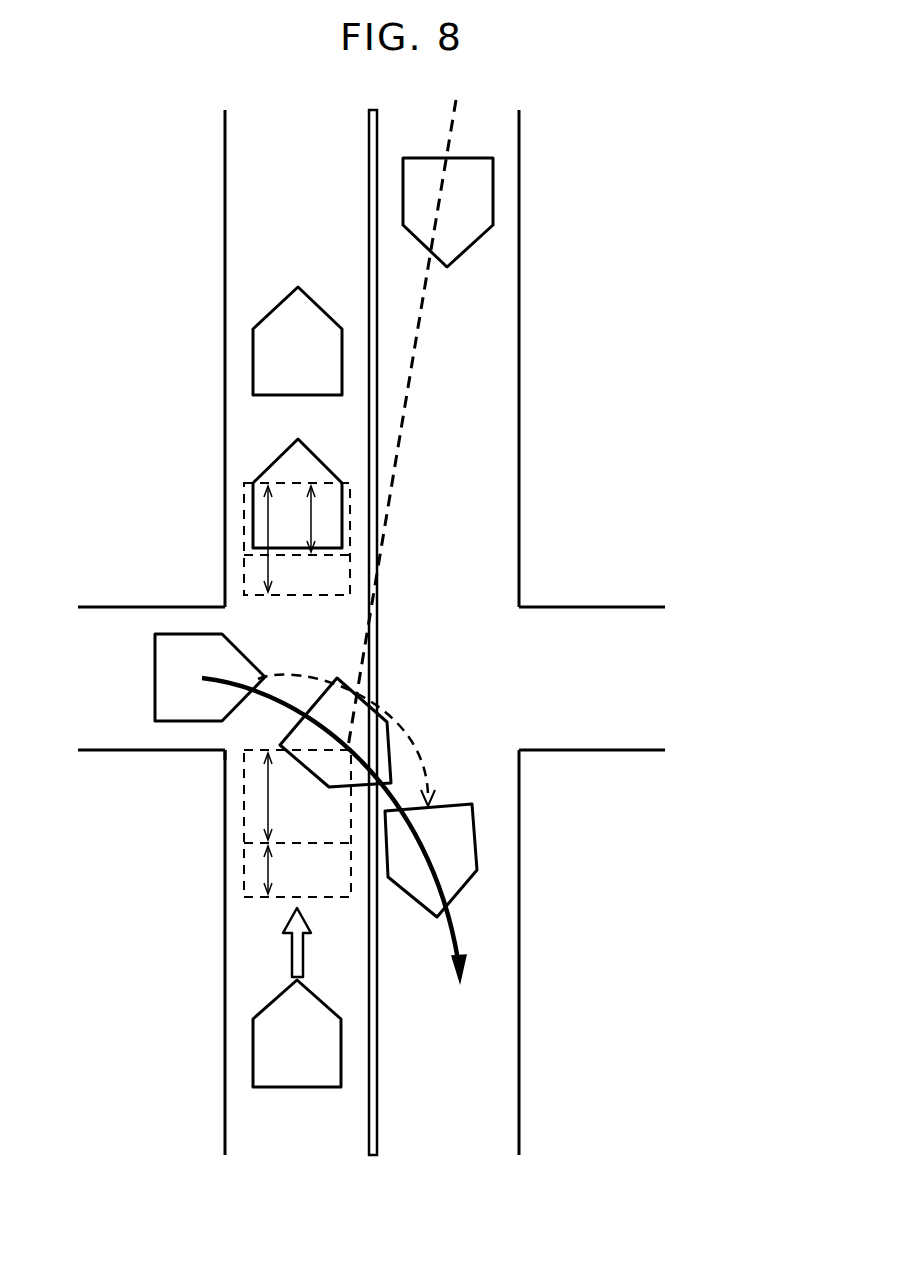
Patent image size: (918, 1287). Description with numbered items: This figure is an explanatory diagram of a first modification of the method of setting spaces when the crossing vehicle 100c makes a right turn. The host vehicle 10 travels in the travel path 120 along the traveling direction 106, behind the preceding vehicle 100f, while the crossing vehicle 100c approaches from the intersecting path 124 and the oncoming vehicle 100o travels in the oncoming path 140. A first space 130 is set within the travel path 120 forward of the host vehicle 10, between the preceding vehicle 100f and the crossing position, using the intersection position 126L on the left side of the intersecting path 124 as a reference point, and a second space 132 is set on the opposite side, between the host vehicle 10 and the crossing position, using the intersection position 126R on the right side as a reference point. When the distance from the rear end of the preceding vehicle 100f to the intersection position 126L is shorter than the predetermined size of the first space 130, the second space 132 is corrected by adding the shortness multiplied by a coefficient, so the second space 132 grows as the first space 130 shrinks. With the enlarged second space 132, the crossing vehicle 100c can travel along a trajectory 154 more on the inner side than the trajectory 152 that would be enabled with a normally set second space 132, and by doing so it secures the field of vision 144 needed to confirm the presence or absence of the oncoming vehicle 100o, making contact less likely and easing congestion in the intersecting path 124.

The host vehicle 10 is at (253, 1053).
The oncoming vehicle 100o is at (493, 175).
The preceding vehicle 100f is at (278, 458).
The crossing vehicle 100c is at (178, 678).
The traveling direction 106 is at (303, 957).
The travel path 120 is at (255, 1125).
The intersecting path 124 is at (113, 605).
The intersection position on the left side 126L is at (222, 605).
The intersection position on the right side 126R is at (222, 752).
The first space 130 is at (243, 548).
The second space 132 is at (244, 857).
The oncoming path 140 is at (493, 875).
The field of vision 144 is at (414, 350).
The trajectory 152 is at (403, 737).
The trajectory 154 is at (460, 940).